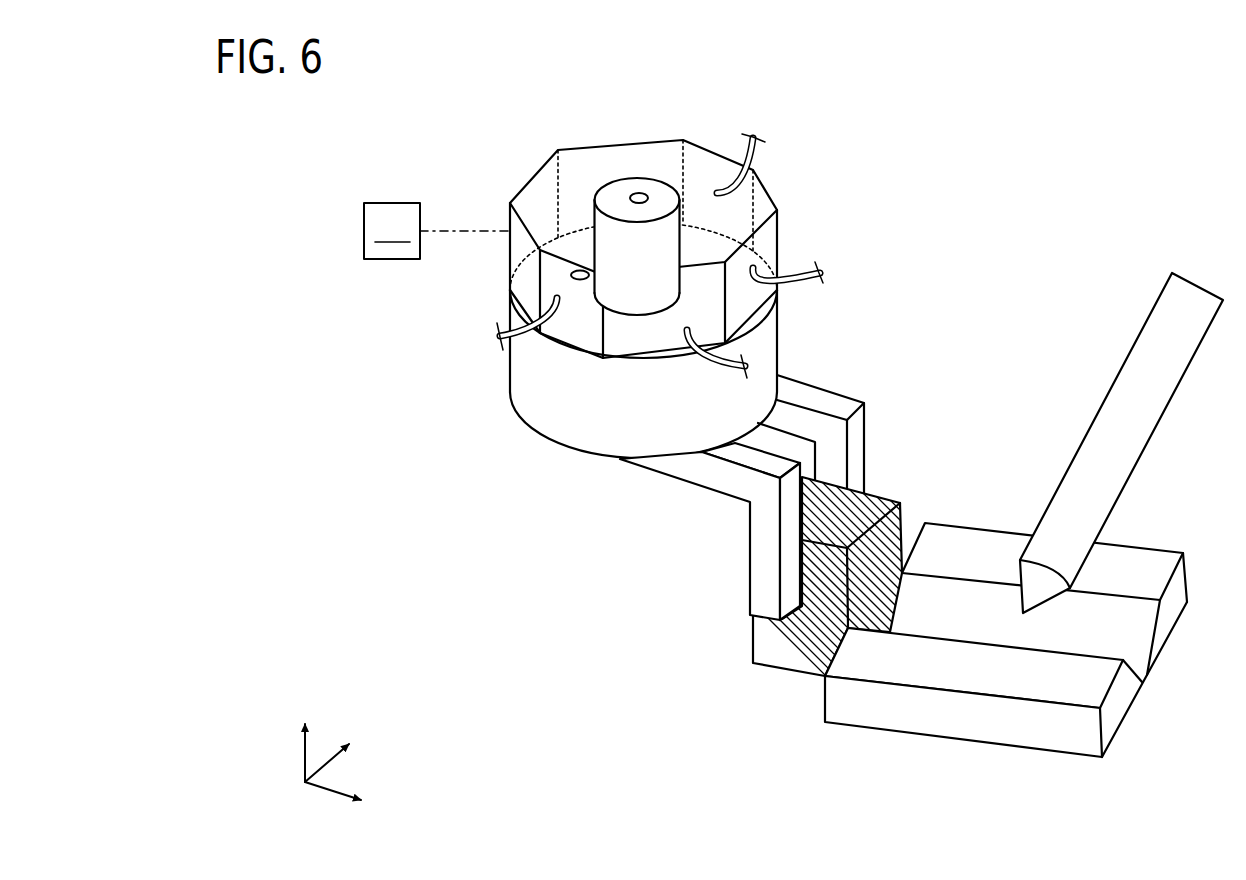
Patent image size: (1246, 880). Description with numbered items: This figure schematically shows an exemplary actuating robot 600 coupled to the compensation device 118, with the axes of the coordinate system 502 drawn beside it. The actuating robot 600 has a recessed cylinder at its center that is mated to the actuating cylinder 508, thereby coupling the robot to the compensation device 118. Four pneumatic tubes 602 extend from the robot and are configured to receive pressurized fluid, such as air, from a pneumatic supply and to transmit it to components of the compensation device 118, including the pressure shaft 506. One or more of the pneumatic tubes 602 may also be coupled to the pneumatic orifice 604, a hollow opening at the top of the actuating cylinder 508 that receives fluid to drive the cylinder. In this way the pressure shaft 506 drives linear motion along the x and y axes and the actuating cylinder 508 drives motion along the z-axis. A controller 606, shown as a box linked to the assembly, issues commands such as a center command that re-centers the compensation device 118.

The actuating robot 600 is at (633, 69).
The compensation device 118 is at (479, 411).
The actuating cylinder 508 is at (595, 190).
The pneumatic orifice 604 is at (643, 193).
The pressure shaft 506 is at (579, 280).
The pneumatic tubes 602 is at (758, 148).
The controller 606 is at (436, 231).
The coordinate system 502 is at (348, 675).